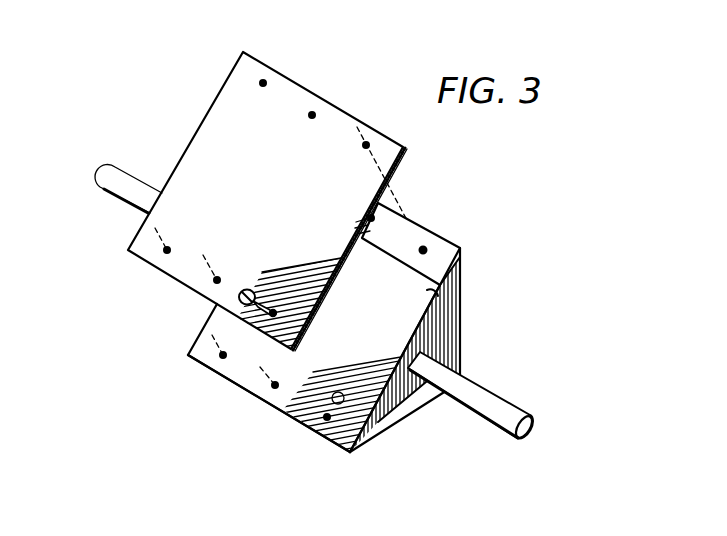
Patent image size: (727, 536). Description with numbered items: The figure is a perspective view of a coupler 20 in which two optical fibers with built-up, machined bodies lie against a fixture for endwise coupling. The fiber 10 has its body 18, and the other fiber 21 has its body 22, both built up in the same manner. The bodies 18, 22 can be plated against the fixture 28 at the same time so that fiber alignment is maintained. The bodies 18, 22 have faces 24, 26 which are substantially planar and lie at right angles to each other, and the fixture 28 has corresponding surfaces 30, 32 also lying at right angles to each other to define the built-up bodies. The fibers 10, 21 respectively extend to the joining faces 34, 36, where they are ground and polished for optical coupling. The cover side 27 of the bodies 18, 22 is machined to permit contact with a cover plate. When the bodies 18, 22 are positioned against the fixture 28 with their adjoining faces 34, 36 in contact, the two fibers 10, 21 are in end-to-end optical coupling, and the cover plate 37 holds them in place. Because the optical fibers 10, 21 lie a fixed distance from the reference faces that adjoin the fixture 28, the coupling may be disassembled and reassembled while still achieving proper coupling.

The fiber 10 is at (130, 207).
The body 18 is at (218, 313).
The coupler 20 is at (458, 197).
The fiber 21 is at (498, 403).
The body 22 is at (432, 323).
The face 24 is at (390, 420).
The face 26 is at (462, 340).
The cover side 27 is at (385, 347).
The fixture 28 is at (460, 240).
The surface 30 is at (340, 352).
The surface 32 is at (440, 301).
The joining face 34 is at (284, 408).
The joining face 36 is at (327, 414).
The cover plate 37 is at (250, 55).